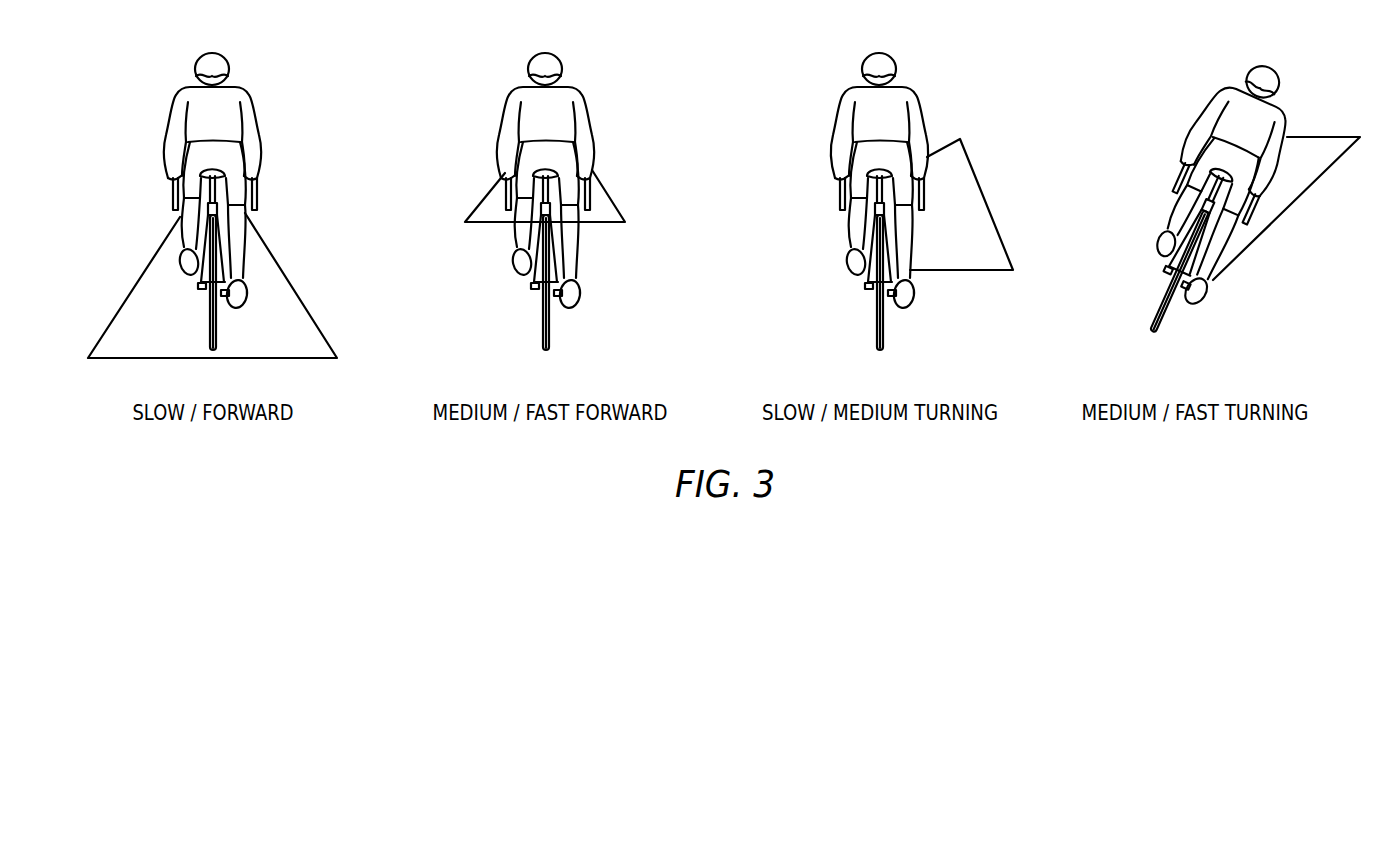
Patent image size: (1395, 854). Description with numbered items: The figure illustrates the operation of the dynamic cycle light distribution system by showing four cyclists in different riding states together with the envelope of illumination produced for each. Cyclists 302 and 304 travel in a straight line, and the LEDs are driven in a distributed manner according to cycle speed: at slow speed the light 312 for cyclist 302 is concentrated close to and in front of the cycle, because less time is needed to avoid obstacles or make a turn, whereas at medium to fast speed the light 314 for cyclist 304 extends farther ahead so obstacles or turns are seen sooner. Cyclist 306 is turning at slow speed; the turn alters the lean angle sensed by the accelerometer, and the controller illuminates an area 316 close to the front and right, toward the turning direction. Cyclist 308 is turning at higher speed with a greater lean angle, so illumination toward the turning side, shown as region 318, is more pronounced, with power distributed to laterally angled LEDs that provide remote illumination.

The cyclist 302 is at (258, 118).
The cyclist 304 is at (590, 118).
The cyclist 306 is at (925, 118).
The cyclist 308 is at (1288, 115).
The light 312 is at (310, 307).
The light 314 is at (617, 200).
The area 316 is at (990, 202).
The light beam pattern for medium / fast turning 318 is at (1290, 203).